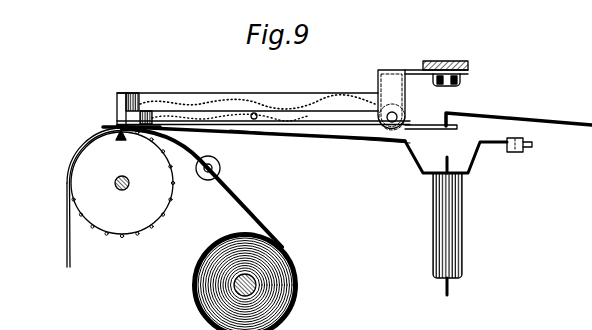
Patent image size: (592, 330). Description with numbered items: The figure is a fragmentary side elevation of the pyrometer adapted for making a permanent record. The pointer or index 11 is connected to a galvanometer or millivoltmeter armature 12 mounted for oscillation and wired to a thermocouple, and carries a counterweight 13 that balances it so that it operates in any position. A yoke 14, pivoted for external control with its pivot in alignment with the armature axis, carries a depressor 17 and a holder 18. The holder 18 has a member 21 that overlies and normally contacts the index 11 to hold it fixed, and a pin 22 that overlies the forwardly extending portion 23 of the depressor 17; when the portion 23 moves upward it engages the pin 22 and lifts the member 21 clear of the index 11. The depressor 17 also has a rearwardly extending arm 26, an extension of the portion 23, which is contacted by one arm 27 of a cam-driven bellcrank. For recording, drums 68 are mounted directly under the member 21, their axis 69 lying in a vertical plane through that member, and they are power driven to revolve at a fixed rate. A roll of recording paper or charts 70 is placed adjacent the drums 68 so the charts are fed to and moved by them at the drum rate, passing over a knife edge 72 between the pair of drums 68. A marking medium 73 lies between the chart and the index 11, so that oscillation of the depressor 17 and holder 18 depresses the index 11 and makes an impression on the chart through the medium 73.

The pointer or index 11 is at (287, 135).
The galvanometer or millivoltmeter armature 12 is at (463, 233).
The counterweight 13 is at (515, 152).
The yoke 14 is at (393, 72).
The depressor 17 is at (357, 130).
The holder 18 is at (148, 104).
The member 21 is at (116, 102).
The pin or member 22 is at (254, 112).
The forwardly extending portion 23 is at (325, 133).
The rearwardly extending arm 26 is at (424, 125).
The arm of bellcrank 27 is at (538, 119).
The drums 68 is at (133, 223).
The axis of the drums 69 is at (114, 182).
The roll of recording paper or charts 70 is at (300, 291).
The knife edge 72 is at (113, 137).
The marking medium 73 is at (104, 127).